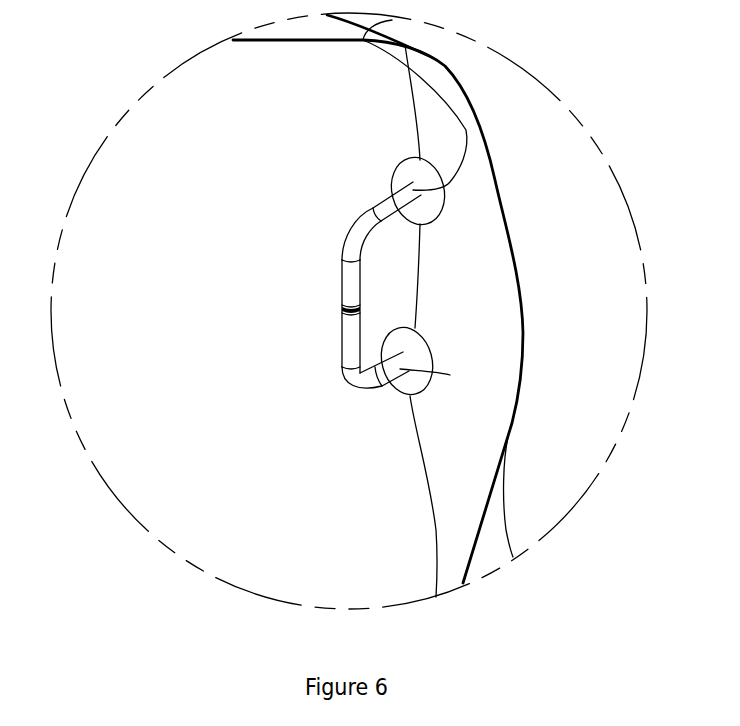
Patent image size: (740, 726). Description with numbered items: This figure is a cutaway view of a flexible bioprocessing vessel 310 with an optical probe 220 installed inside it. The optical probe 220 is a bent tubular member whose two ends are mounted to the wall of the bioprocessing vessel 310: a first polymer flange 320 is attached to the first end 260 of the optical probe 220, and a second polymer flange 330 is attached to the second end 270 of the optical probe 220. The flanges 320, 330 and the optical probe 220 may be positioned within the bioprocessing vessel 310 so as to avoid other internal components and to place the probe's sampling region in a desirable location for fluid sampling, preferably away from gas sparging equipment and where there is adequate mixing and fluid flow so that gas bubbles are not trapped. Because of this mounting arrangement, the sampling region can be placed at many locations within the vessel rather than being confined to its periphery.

The optical probe 220 is at (342, 288).
The first end 260 is at (466, 130).
The second end 270 is at (450, 375).
The flexible bioprocessing vessel 310 is at (518, 243).
The first polymer flange 320 is at (445, 190).
The second polymer flange 330 is at (433, 361).